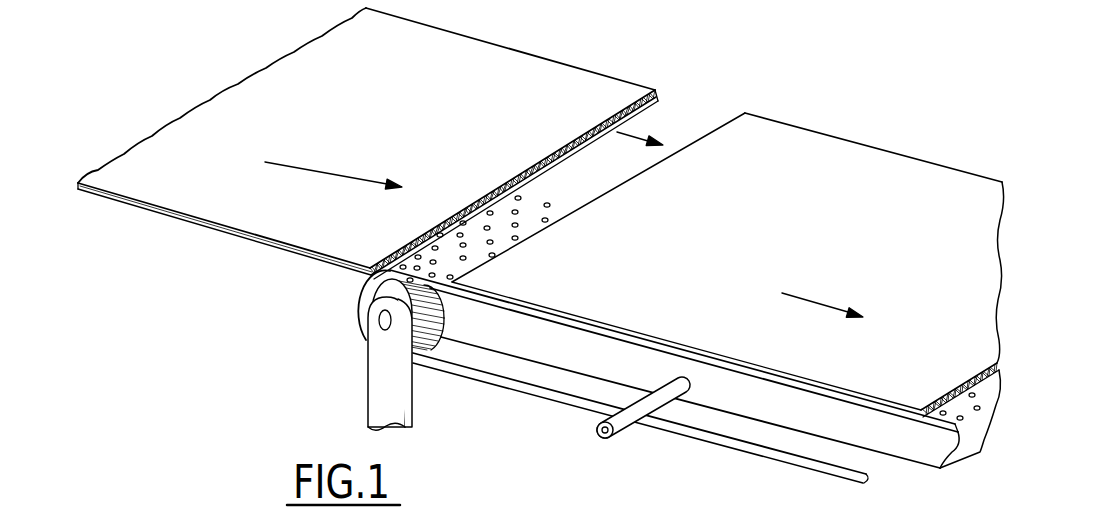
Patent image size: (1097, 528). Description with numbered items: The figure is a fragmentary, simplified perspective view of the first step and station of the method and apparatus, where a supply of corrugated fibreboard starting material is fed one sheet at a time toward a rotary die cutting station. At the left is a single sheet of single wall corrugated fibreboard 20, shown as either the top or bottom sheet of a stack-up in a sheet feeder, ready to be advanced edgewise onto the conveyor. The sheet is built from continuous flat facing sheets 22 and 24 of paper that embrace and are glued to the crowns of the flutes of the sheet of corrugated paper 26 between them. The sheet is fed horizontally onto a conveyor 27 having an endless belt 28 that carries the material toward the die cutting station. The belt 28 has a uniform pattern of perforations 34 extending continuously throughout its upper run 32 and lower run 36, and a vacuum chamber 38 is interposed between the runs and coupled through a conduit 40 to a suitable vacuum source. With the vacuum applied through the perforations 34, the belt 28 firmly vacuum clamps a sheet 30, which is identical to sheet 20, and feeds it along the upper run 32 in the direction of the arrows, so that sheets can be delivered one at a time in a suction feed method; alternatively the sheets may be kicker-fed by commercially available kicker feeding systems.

The single wall corrugated fibreboard sheet 20 is at (483, 54).
The flat facing sheet 22 is at (228, 212).
The flat facing sheet 24 is at (284, 247).
The sheet of corrugated paper 26 is at (551, 156).
The conveyor 27 is at (490, 396).
The endless belt 28 is at (708, 100).
The sheet 30 is at (783, 145).
The upper run 32 is at (664, 117).
The perforations 34 is at (549, 205).
The lower run 36 is at (530, 400).
The vacuum chamber 38 is at (735, 398).
The conduit 40 is at (630, 440).